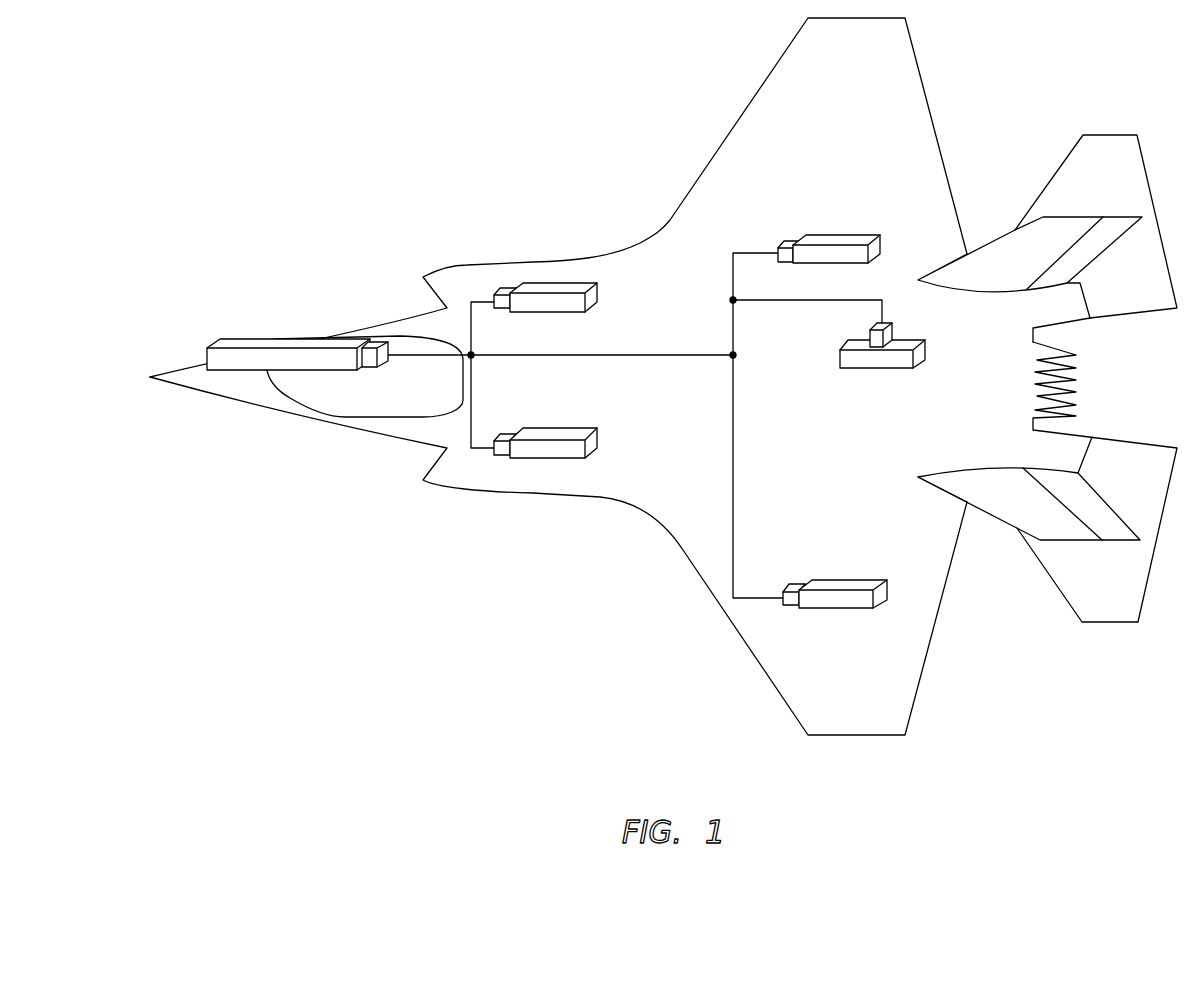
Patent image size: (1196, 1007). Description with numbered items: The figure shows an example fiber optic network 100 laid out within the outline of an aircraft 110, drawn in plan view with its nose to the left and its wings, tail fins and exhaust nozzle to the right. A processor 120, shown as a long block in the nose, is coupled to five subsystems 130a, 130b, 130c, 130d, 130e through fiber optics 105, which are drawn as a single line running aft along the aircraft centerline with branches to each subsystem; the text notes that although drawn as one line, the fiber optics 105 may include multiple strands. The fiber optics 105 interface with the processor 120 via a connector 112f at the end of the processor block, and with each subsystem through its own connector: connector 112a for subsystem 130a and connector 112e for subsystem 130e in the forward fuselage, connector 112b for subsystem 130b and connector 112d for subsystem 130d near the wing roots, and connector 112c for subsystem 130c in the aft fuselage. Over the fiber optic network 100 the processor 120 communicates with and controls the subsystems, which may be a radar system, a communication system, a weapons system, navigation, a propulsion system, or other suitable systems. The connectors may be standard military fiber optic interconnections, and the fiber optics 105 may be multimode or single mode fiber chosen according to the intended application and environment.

The fiber optic network 100 is at (663, 417).
The fiber optics 105 is at (733, 586).
The aircraft 110 is at (913, 713).
The connector 112a is at (506, 287).
The connector 112b is at (787, 240).
The connector 112c is at (872, 327).
The connector 112d is at (792, 607).
The connector 112e is at (500, 457).
The connector 112f is at (372, 343).
The processor 120 is at (238, 338).
The subsystem 130a is at (541, 282).
The subsystem 130b is at (860, 233).
The subsystem 130c is at (895, 370).
The subsystem 130d is at (888, 590).
The subsystem 130e is at (558, 460).